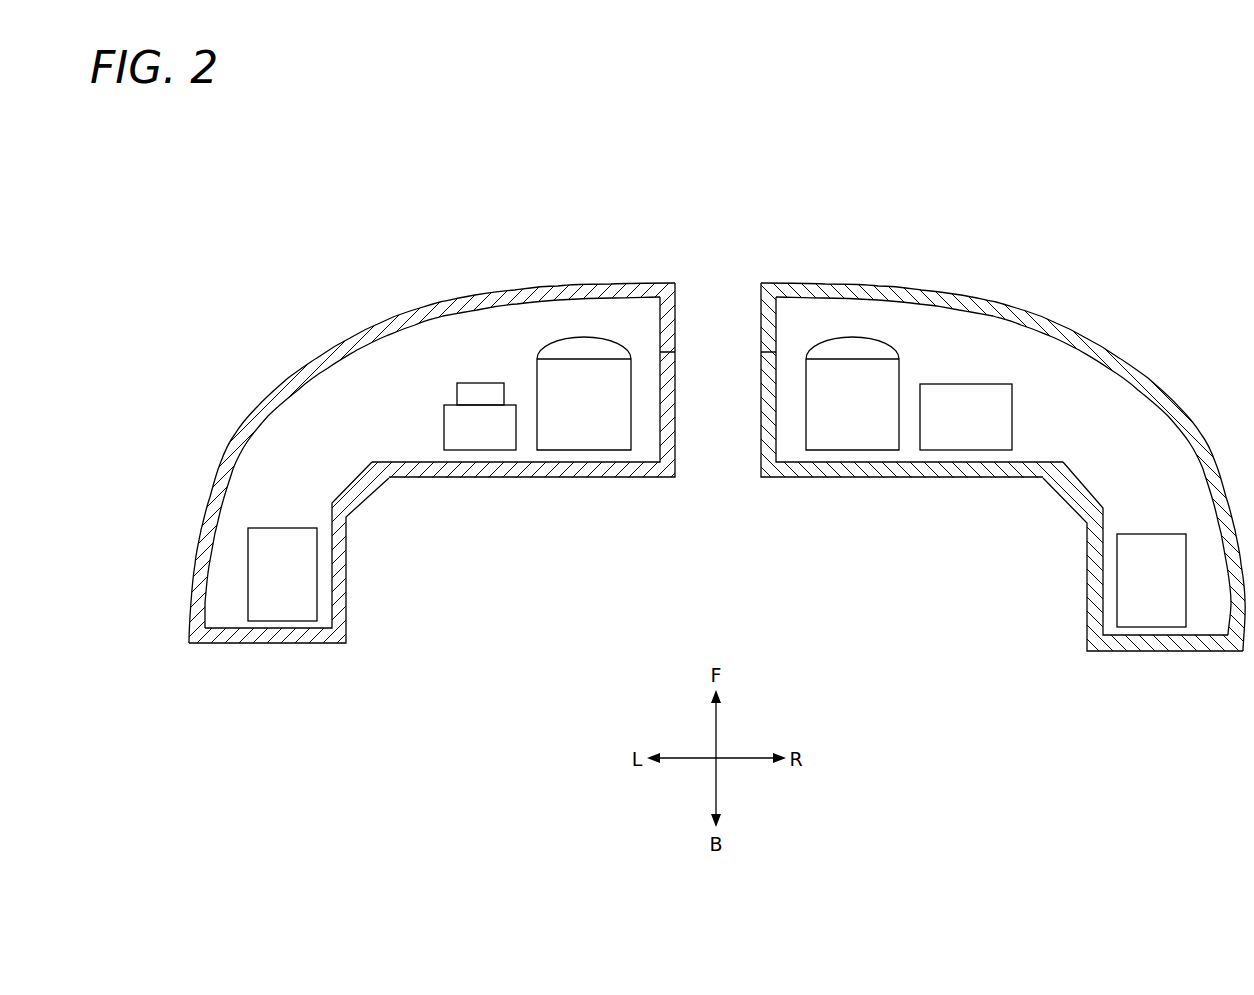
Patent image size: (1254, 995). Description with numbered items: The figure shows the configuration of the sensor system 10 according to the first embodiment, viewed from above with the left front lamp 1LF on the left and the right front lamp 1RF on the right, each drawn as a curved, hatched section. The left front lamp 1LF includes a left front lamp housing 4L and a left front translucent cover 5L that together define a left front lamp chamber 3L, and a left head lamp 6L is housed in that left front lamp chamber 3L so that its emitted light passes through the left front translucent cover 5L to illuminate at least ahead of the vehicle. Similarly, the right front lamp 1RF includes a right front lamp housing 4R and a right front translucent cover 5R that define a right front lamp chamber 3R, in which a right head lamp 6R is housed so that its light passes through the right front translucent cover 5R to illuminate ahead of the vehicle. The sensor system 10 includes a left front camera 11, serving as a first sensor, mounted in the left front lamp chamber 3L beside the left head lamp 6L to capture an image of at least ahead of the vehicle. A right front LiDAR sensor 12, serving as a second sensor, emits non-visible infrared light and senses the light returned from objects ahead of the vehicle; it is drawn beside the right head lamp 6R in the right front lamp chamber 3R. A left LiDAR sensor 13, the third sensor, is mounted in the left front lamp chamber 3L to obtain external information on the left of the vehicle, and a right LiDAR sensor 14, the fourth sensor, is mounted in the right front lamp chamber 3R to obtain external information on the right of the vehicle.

The sensor system 10 is at (734, 195).
The left front lamp 1LF is at (432, 425).
The right front lamp 1RF is at (1003, 427).
The left front lamp chamber 3L is at (335, 374).
The right front lamp chamber 3R is at (1060, 360).
The left front lamp housing 4L is at (530, 464).
The right front lamp housing 4R is at (910, 464).
The left front translucent cover 5L is at (258, 410).
The right front translucent cover 5R is at (1170, 395).
The left head lamp 6L is at (577, 440).
The right head lamp 6R is at (852, 440).
The left front camera 11 is at (475, 438).
The right front LiDAR sensor 12 is at (967, 438).
The left LiDAR sensor 13 is at (283, 615).
The right LiDAR sensor 14 is at (1152, 620).